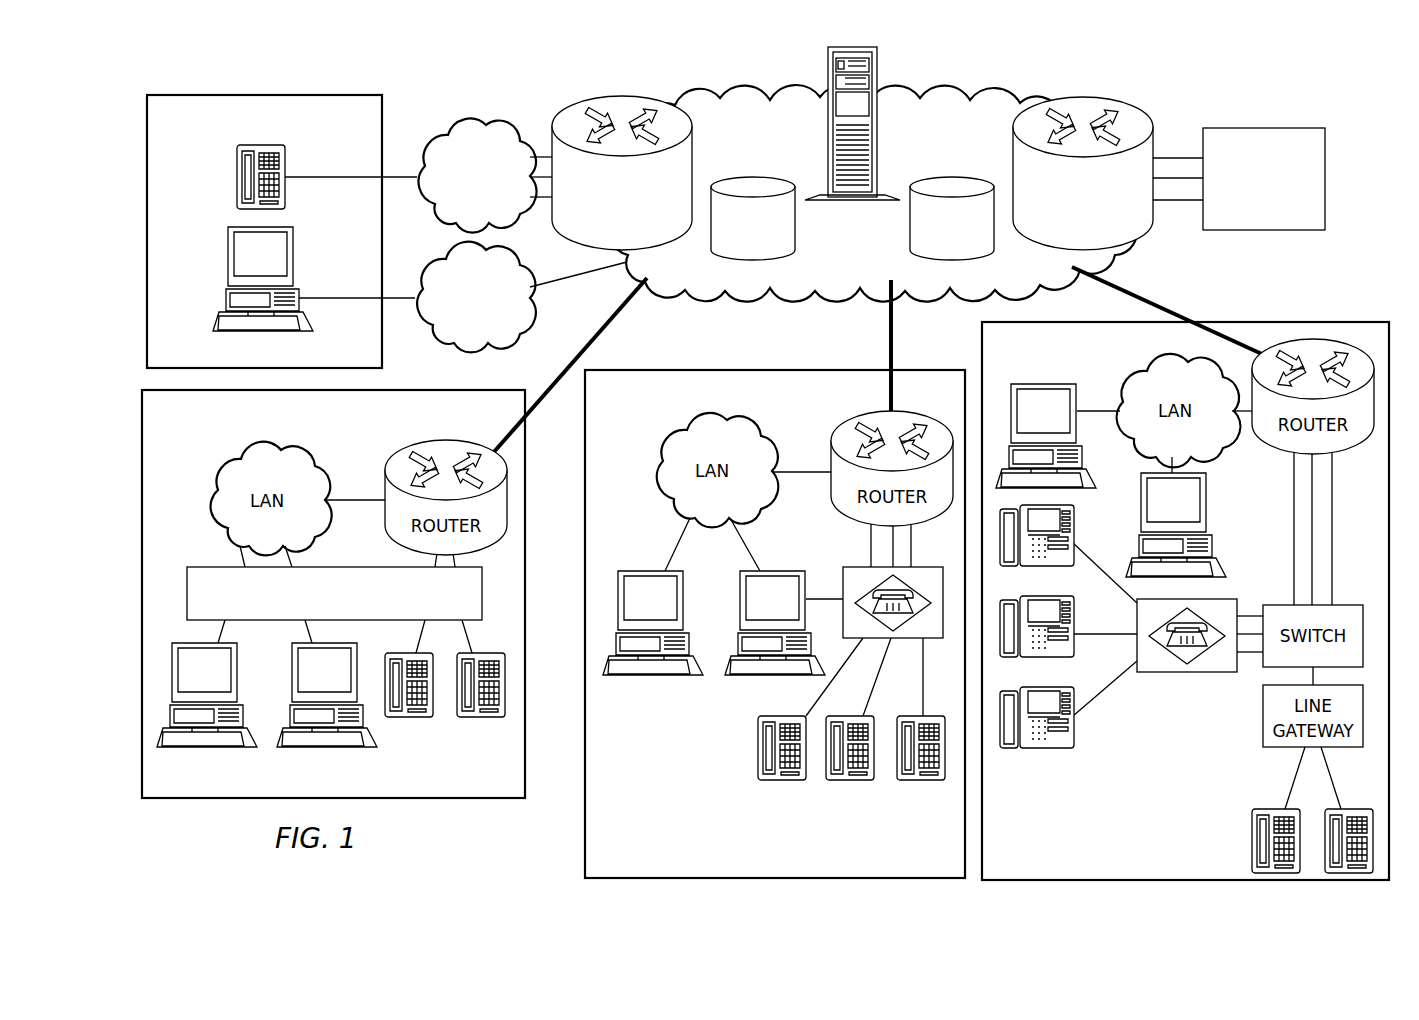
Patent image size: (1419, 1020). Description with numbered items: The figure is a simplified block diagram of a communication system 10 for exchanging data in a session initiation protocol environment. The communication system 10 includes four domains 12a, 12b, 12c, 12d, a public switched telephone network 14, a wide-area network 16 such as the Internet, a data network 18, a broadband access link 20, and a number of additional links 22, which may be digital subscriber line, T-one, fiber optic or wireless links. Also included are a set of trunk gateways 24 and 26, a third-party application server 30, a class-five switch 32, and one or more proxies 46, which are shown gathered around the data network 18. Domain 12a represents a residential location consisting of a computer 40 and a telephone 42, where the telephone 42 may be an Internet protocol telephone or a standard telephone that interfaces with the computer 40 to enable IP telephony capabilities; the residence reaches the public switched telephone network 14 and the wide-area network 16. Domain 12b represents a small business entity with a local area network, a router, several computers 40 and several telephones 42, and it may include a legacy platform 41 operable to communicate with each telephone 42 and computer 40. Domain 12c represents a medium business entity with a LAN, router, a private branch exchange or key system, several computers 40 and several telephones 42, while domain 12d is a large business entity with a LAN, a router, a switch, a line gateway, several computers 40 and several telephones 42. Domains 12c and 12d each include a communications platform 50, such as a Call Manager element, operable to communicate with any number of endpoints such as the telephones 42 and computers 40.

The communication system 10 is at (1368, 106).
The domain 12a is at (193, 93).
The domain 12b is at (458, 800).
The domain 12c is at (750, 367).
The domain 12d is at (1335, 321).
The public switched telephone network 14 is at (462, 128).
The wide-area network 16 is at (425, 265).
The data network 18 is at (778, 98).
The broadband access link 20 is at (590, 345).
The additional links 22 is at (890, 322).
The trunk gateway 24 is at (602, 95).
The trunk gateway 26 is at (1100, 97).
The third-party application server 30 is at (878, 80).
The Class-5 switch 32 is at (1282, 232).
The computer 40 is at (250, 266).
The legacy platform 41 is at (208, 567).
The telephone 42 is at (236, 170).
The proxy 46 is at (751, 177).
The communications platform 50 is at (843, 568).